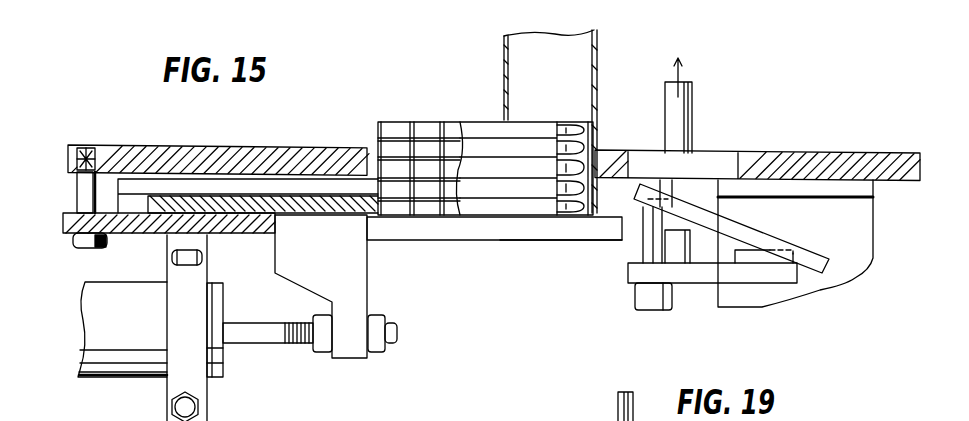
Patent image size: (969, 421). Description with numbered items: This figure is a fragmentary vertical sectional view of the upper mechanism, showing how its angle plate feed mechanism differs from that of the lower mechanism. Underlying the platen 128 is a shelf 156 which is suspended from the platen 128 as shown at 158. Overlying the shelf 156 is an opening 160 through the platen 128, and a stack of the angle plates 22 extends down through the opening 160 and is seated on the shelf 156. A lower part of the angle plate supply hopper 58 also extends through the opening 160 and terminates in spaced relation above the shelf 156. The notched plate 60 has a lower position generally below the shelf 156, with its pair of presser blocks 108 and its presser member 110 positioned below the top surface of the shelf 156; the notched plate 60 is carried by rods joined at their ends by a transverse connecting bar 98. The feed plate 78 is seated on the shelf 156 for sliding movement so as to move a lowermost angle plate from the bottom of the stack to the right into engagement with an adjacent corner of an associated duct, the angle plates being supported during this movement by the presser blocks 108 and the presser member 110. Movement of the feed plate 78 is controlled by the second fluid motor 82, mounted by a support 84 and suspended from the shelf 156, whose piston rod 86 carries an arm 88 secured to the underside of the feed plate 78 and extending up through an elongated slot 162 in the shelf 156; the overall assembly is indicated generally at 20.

The apparatus assembly 20 is at (859, 291).
The angle plate 22 is at (456, 108).
The angle plate supply hopper 58 is at (598, 43).
The notched plate 60 is at (697, 277).
The feed plate 78 is at (305, 196).
The second fluid motor 82 is at (128, 335).
The support 84 is at (209, 415).
The piston rod 86 is at (255, 344).
The arm 88 is at (338, 269).
The transverse connecting bar 98 is at (693, 110).
The presser blocks 108 is at (762, 258).
The presser member 110 is at (640, 212).
The platen 128 is at (285, 146).
The shelf 156 is at (558, 243).
The shelf suspension 158 is at (78, 190).
The opening 160 is at (378, 150).
The elongated slot 162 is at (417, 231).